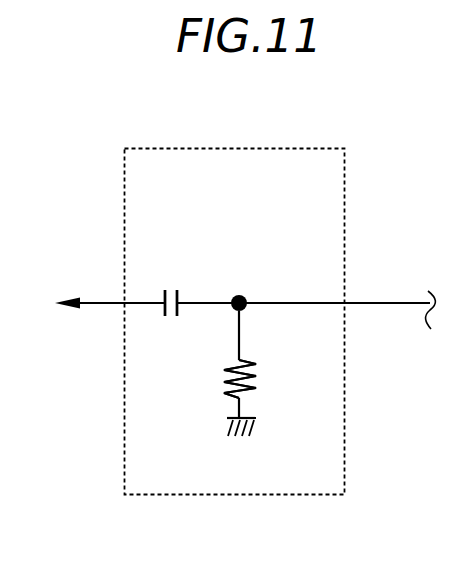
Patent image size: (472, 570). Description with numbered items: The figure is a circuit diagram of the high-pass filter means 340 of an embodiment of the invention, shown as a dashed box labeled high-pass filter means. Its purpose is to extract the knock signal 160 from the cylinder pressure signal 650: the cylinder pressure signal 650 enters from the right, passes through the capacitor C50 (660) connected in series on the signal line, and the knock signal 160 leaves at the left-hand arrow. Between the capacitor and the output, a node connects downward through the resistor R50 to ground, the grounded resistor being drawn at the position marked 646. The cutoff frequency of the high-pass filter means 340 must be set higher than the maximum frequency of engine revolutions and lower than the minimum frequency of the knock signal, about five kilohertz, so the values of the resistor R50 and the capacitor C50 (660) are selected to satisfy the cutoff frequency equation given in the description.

The high-pass filter means 340 is at (306, 149).
The knock signal 160 is at (93, 302).
The cylinder pressure signal 650 is at (385, 303).
The capacitor C50 660 is at (180, 274).
The resistor 646 is at (226, 385).
The capacitor C50 is at (170, 321).
The resistor R50 is at (261, 379).